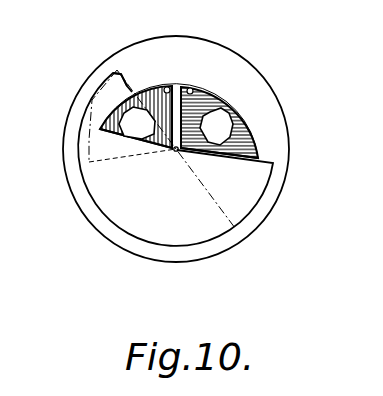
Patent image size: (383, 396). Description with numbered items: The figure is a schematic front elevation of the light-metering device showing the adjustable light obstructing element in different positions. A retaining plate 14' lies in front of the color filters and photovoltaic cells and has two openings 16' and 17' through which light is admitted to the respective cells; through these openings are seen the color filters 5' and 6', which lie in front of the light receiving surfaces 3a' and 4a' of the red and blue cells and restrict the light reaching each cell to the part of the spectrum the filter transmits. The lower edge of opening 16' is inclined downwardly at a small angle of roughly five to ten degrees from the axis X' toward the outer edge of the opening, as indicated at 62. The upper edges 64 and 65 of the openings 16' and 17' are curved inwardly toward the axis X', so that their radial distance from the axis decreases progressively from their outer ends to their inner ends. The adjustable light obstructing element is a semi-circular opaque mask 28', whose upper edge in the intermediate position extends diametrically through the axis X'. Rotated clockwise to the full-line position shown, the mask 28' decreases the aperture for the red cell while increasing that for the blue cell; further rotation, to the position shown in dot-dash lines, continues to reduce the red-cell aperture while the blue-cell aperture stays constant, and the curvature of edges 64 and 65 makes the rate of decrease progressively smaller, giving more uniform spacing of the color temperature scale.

The retaining plate 14' is at (176, 142).
The opening 17' is at (205, 112).
The semi-circular opaque mask 28' is at (203, 159).
The upper edge of opening 64 is at (167, 88).
The upper edge of opening 65 is at (192, 90).
The opening 16' is at (79, 89).
The color filter 5' is at (96, 133).
The color filter 6' is at (249, 144).
The light receiving surface 3a' is at (137, 146).
The light receiving surface 4a' is at (264, 116).
The axis x' is at (176, 149).
The lower edge of opening 62 is at (104, 163).